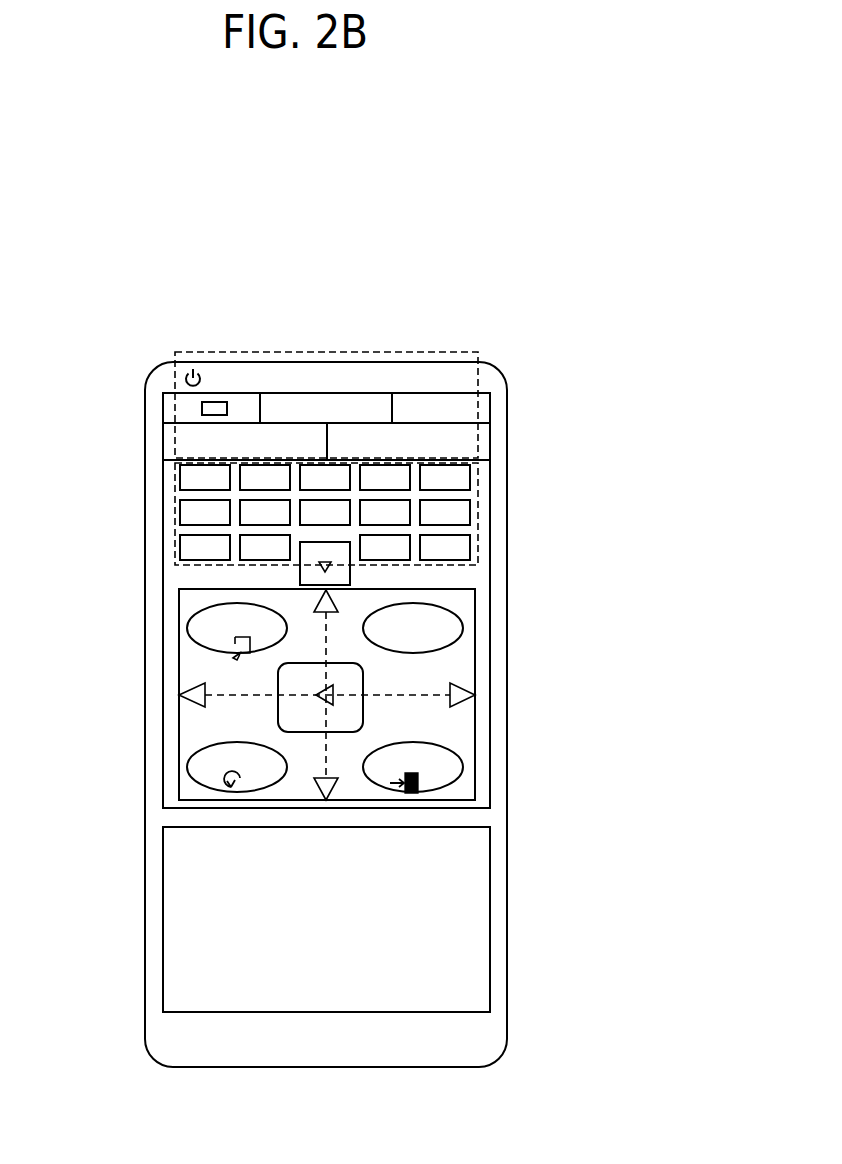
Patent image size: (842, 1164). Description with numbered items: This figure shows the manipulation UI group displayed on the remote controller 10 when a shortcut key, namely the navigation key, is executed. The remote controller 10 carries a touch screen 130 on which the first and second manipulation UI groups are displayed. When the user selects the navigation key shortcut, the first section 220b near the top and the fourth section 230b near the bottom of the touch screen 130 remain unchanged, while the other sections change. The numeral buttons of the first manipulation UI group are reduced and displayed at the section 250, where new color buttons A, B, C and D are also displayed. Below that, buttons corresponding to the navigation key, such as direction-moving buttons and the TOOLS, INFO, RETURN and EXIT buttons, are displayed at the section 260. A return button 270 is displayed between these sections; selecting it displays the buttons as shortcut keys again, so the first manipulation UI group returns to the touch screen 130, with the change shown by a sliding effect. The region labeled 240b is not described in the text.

The remote controller 10 is at (268, 360).
The touch screen 130 is at (160, 772).
The first section 220b is at (175, 413).
The upper function region 240b is at (360, 393).
The section 250 is at (175, 533).
The return button 270 is at (312, 568).
The section 260 is at (179, 678).
The fourth section 230b is at (168, 943).